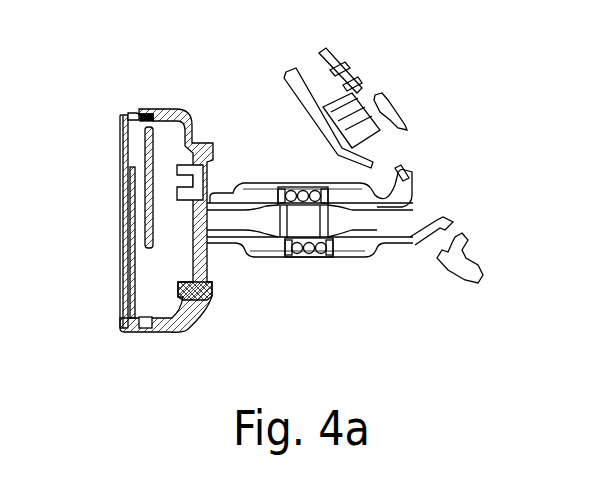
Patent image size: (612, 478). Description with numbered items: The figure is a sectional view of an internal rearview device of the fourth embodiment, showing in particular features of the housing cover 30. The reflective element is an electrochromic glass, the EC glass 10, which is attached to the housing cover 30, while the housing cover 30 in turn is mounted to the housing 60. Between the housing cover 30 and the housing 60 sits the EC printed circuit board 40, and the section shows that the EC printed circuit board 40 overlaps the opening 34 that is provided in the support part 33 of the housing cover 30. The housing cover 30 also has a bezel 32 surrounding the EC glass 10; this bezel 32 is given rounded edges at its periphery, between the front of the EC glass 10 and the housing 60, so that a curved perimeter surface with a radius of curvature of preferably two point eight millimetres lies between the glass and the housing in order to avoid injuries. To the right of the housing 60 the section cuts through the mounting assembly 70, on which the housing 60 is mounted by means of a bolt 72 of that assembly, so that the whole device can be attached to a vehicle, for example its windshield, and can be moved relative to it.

The EC glass 10 is at (118, 293).
The housing cover 30 is at (127, 330).
The bezel 32 is at (128, 114).
The support part 33 is at (133, 182).
The opening 34 is at (133, 121).
The EC printed circuit board 40 is at (155, 147).
The housing 60 is at (170, 108).
The mounting assembly 70 is at (293, 259).
The bolt 72 is at (170, 200).